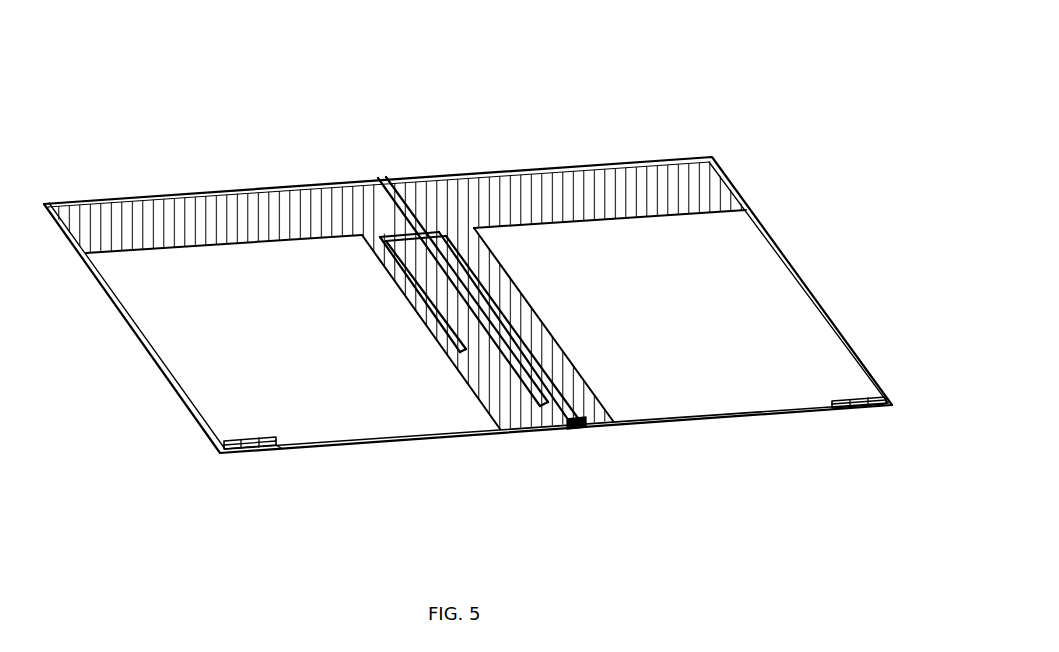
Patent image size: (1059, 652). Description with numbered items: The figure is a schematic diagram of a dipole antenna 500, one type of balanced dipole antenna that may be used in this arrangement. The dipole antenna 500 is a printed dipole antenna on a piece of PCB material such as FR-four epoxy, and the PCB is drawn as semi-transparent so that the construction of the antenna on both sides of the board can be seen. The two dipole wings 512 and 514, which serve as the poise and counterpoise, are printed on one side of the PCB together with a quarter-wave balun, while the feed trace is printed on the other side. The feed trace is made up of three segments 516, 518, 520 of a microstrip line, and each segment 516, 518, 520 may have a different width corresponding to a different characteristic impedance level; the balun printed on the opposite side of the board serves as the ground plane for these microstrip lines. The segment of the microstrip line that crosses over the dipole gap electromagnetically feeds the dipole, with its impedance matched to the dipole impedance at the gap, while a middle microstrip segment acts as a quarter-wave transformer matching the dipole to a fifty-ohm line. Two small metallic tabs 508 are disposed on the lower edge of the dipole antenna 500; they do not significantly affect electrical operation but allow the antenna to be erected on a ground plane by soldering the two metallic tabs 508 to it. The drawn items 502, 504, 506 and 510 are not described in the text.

The dipole antenna 500 is at (468, 234).
The feed line 502 is at (534, 326).
The feed point 504 is at (576, 430).
The ground plane region 506 is at (385, 223).
The metallic tabs 508 is at (245, 447).
The slot 510 is at (381, 178).
The dipole wing 512 is at (156, 208).
The dipole wing 514 is at (685, 172).
The microstrip line segment 516 is at (542, 365).
The microstrip line segment 518 is at (428, 229).
The microstrip line segment 520 is at (414, 288).